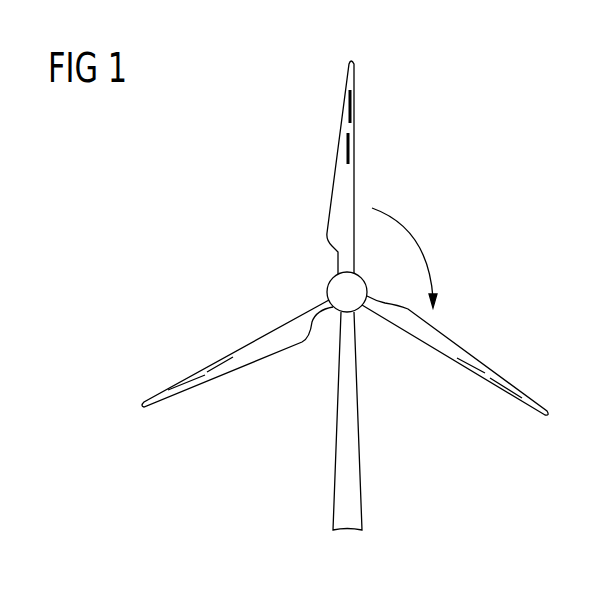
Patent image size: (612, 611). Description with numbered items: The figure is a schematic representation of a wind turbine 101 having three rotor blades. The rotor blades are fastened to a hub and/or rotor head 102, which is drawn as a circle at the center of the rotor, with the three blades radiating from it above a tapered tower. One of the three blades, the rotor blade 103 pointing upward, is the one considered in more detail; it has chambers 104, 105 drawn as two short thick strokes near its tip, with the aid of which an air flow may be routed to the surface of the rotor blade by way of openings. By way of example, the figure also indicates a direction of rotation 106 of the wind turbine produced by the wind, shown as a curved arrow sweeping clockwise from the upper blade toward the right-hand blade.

The wind turbine 101 is at (252, 125).
The hub and/or rotor head 102 is at (327, 285).
The rotor blade 103 is at (332, 193).
The chamber 104 is at (348, 148).
The chamber 105 is at (350, 107).
The direction of rotation 106 is at (415, 238).